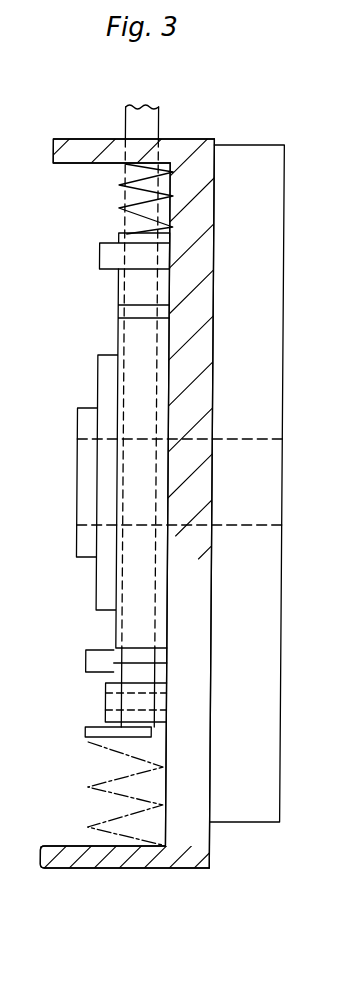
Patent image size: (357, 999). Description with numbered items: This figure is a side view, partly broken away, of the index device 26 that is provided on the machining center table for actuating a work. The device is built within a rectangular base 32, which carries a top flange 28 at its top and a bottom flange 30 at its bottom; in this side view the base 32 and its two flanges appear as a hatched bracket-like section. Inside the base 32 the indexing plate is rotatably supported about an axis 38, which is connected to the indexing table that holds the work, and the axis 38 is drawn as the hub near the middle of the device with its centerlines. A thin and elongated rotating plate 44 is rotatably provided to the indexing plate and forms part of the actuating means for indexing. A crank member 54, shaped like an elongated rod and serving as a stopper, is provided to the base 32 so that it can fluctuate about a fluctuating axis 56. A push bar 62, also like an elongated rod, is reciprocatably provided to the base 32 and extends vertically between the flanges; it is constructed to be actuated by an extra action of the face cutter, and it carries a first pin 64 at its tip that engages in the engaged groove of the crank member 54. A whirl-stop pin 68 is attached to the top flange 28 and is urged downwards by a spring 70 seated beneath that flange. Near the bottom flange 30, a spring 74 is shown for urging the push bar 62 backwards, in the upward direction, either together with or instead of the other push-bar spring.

The index device 26 is at (148, 876).
The top flange 28 is at (80, 150).
The bottom flange 30 is at (65, 863).
The rectangular base 32 is at (195, 852).
The axis 38 is at (80, 488).
The rotating plate 44 is at (107, 372).
The crank member 54 is at (110, 718).
The fluctuating axis 56 is at (107, 703).
The push bar 62 is at (156, 118).
The first pin 64 is at (92, 662).
The whirl-stop pin 68 is at (120, 286).
The spring 70 is at (118, 208).
The spring 74 is at (85, 777).